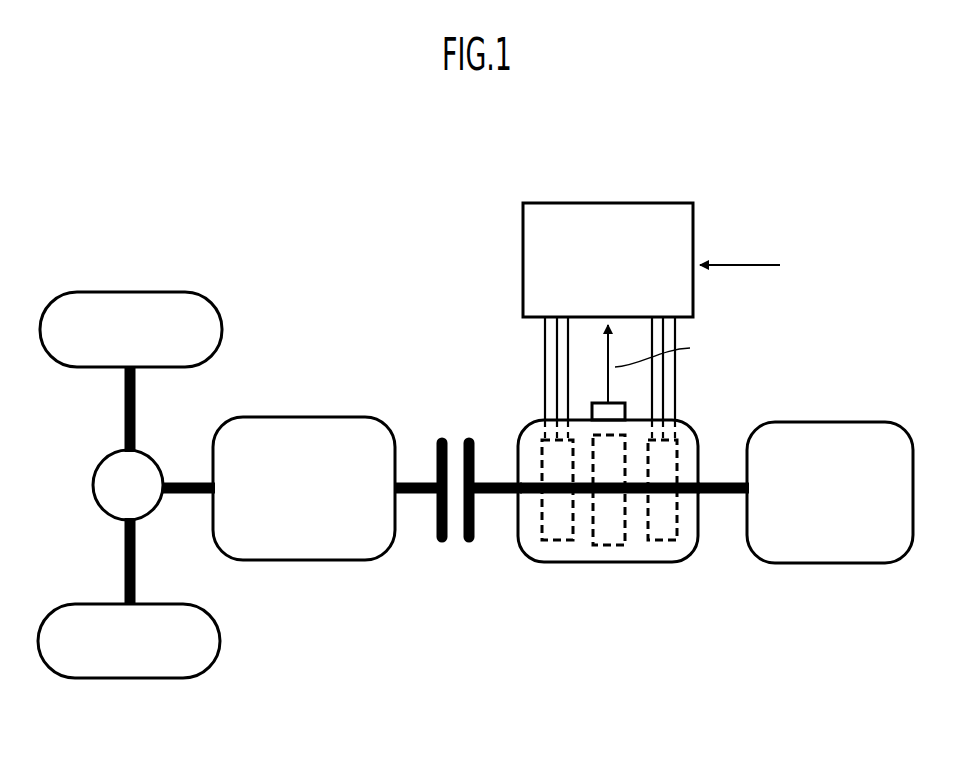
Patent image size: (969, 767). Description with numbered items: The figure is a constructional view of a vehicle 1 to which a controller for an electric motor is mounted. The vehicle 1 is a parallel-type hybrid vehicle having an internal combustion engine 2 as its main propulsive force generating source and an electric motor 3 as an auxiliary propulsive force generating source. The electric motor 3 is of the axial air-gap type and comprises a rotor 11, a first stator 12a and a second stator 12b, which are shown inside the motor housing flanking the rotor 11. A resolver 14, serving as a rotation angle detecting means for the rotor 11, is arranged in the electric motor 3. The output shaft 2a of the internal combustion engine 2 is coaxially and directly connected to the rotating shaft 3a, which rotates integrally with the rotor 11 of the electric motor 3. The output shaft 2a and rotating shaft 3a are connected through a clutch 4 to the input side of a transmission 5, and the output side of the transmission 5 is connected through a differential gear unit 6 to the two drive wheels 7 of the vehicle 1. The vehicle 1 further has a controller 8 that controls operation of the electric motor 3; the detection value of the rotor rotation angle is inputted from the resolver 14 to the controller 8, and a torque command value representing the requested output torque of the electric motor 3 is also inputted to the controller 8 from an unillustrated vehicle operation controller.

The vehicle 1 is at (355, 248).
The internal combustion engine 2 is at (830, 422).
The output shaft 2a is at (721, 484).
The electric motor 3 is at (648, 506).
The rotating shaft 3a is at (497, 497).
The clutch 4 is at (457, 445).
The transmission 5 is at (336, 417).
The differential gear unit 6 is at (158, 458).
The drive wheels 7 is at (162, 292).
The controller 8 is at (608, 203).
The rotor 11 is at (637, 542).
The first stator 12a is at (553, 545).
The second stator 12b is at (678, 527).
The resolver 14 is at (593, 412).